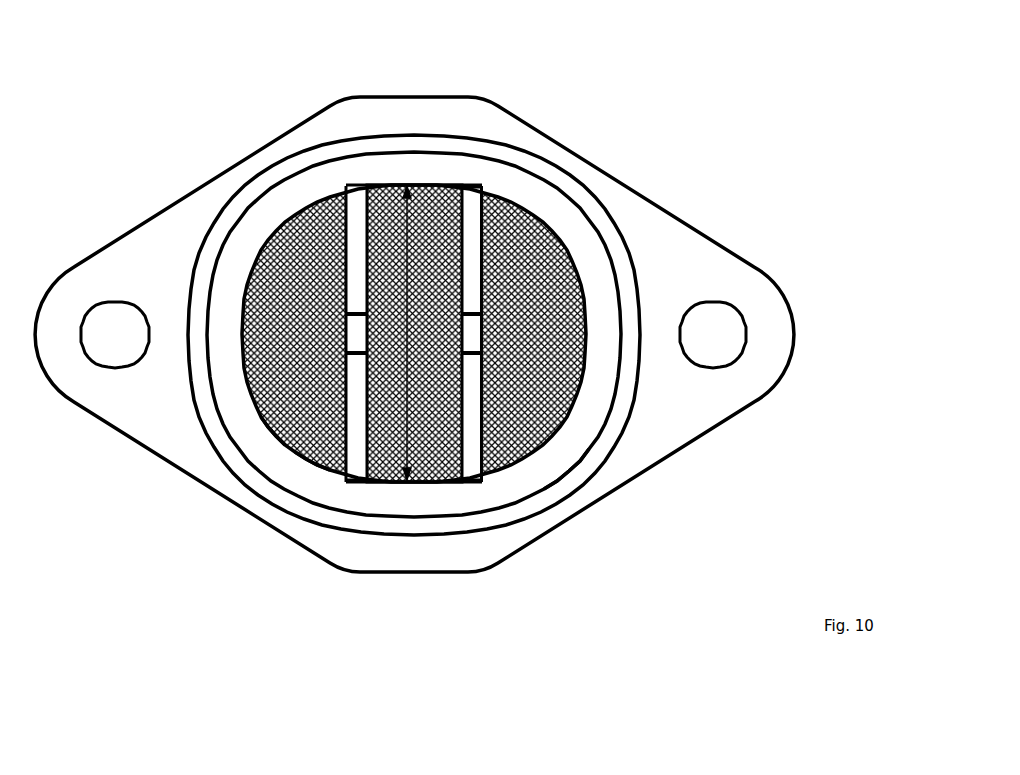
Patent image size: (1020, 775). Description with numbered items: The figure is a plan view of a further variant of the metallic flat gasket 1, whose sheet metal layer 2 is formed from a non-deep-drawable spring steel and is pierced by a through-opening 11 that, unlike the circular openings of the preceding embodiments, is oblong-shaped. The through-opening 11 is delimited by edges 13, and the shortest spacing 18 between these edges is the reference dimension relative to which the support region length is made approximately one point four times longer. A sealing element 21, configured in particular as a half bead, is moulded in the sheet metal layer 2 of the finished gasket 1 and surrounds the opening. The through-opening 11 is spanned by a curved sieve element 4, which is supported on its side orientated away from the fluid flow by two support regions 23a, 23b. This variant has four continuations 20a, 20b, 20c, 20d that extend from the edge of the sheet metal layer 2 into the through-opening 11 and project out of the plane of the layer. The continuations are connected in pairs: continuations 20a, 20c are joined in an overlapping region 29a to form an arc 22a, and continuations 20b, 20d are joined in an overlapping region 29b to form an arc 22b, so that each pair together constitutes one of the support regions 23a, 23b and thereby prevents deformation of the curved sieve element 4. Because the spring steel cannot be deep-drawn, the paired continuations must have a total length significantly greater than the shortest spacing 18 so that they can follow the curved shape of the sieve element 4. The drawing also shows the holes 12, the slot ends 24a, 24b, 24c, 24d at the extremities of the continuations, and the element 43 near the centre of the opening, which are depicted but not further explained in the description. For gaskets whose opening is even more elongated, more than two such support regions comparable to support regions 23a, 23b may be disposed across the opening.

The metallic flat gasket 1 is at (146, 138).
The sheet metal layer 2 is at (695, 418).
The curved sieve element 4 is at (424, 440).
The through-opening 11 is at (268, 248).
The fastening holes 12 is at (126, 337).
The edges of the through-opening 13 is at (248, 387).
The shortest spacing between the edges of the through-opening 18 is at (428, 187).
The continuation 20a is at (354, 237).
The continuation 20b is at (473, 257).
The continuation 20c is at (352, 430).
The continuation 20d is at (471, 430).
The sealing element 21 is at (575, 463).
The arc 22a is at (303, 455).
The arc 22b is at (503, 245).
The support region 23a is at (317, 205).
The support region 23b is at (518, 462).
The slot end 24a is at (353, 187).
The slot end 24b is at (473, 190).
The slot end 24c is at (352, 482).
The slot end 24d is at (470, 483).
The overlapping region 29a is at (260, 415).
The overlapping region 29b is at (483, 310).
The bottom edge of web 43 is at (390, 425).